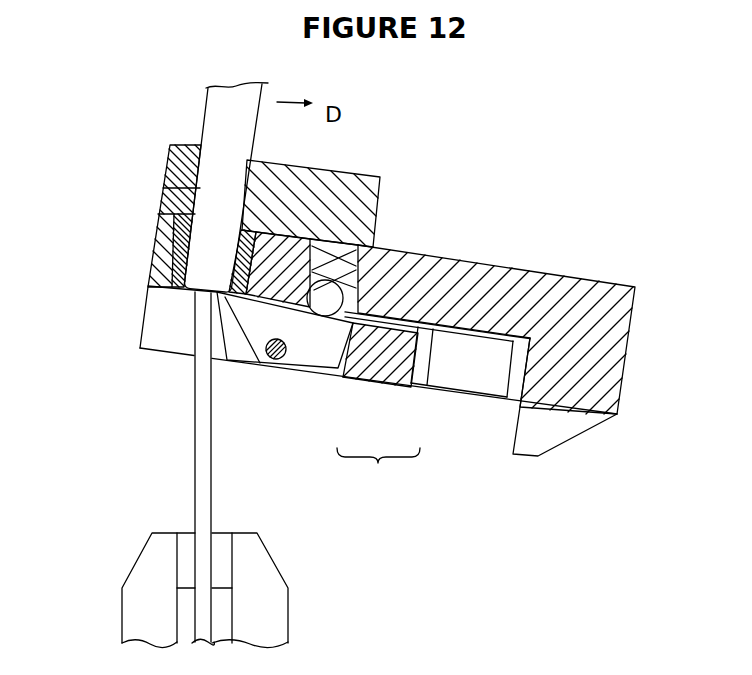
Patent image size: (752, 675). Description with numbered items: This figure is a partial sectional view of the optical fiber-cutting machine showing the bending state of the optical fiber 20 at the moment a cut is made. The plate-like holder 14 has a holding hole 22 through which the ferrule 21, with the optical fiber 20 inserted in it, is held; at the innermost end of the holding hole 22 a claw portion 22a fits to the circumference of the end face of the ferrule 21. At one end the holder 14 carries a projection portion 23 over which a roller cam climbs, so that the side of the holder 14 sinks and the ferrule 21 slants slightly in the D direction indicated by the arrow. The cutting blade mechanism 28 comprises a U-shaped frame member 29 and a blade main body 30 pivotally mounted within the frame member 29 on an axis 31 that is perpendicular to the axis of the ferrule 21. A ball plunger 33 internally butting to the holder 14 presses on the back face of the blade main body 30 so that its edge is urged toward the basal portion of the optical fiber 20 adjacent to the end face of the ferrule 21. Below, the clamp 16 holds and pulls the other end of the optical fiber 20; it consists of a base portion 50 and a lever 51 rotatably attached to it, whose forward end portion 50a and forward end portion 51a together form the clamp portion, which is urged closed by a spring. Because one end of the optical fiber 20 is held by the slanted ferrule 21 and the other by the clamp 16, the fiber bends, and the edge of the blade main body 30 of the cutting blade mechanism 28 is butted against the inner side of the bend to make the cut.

The holder 14 is at (455, 268).
The clamp 16 is at (198, 565).
The optical fiber 20 is at (212, 432).
The ferrule 21 is at (210, 107).
The holding hole 22 is at (163, 188).
The claw portion 22a is at (183, 289).
The projection portion 23 is at (535, 440).
The cutting blade mechanism 28 is at (378, 471).
The frame member 29 is at (390, 360).
The blade main body 30 is at (317, 357).
The axis 31 is at (281, 366).
The ball plunger 33 is at (343, 298).
The base portion 50 is at (282, 582).
The forward end portion of the base portion 50a is at (225, 555).
The lever 51 is at (119, 565).
The forward end portion of the lever 51a is at (183, 550).